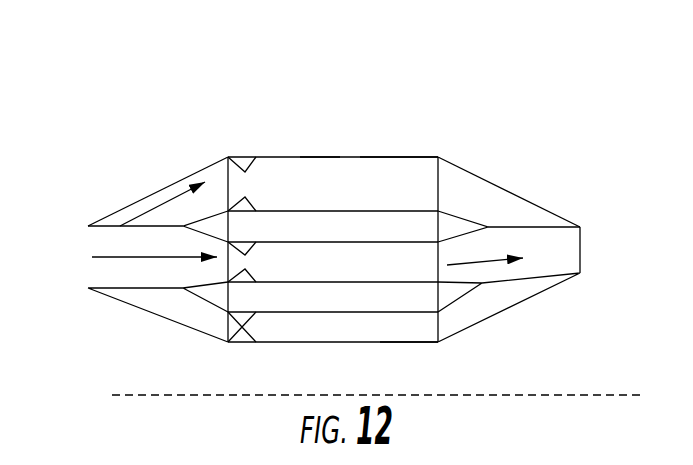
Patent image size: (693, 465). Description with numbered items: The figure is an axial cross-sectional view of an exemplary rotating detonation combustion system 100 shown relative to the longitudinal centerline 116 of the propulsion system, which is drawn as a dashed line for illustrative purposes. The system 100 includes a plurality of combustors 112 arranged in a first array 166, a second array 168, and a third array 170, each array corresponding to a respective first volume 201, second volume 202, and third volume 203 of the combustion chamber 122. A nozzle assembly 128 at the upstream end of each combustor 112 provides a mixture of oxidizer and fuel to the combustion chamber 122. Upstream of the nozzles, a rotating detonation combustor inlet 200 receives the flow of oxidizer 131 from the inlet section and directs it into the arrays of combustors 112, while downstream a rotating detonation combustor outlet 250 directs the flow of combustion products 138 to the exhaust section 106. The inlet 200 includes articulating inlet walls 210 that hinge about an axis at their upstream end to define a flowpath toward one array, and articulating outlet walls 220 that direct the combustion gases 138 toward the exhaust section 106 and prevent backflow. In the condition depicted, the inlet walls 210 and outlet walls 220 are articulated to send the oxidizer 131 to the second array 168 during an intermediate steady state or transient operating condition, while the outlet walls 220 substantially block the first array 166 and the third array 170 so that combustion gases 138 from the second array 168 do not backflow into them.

The rotating detonation combustion system 100 is at (340, 72).
The exhaust section 106 is at (657, 188).
The combustors 112 is at (380, 155).
The longitudinal centerline 116 is at (573, 393).
The combustion chamber 122 is at (383, 195).
The nozzle assembly 128 is at (233, 157).
The flow of oxidizer 131 is at (148, 258).
The flow of combustion products 138 is at (487, 258).
The first array 166 is at (317, 155).
The second array 168 is at (277, 235).
The third array 170 is at (274, 310).
The rotating detonation combustor inlet 200 is at (160, 150).
The first volume 201 is at (348, 197).
The second volume 202 is at (347, 275).
The third volume 203 is at (337, 327).
The articulating inlet wall 210 is at (107, 233).
The articulating outlet wall 220 is at (551, 230).
The rotating detonation combustor outlet 250 is at (513, 158).